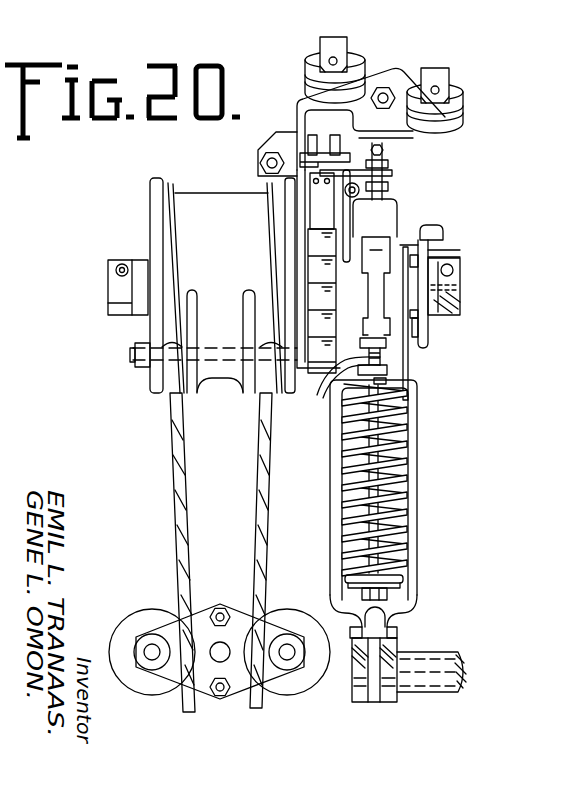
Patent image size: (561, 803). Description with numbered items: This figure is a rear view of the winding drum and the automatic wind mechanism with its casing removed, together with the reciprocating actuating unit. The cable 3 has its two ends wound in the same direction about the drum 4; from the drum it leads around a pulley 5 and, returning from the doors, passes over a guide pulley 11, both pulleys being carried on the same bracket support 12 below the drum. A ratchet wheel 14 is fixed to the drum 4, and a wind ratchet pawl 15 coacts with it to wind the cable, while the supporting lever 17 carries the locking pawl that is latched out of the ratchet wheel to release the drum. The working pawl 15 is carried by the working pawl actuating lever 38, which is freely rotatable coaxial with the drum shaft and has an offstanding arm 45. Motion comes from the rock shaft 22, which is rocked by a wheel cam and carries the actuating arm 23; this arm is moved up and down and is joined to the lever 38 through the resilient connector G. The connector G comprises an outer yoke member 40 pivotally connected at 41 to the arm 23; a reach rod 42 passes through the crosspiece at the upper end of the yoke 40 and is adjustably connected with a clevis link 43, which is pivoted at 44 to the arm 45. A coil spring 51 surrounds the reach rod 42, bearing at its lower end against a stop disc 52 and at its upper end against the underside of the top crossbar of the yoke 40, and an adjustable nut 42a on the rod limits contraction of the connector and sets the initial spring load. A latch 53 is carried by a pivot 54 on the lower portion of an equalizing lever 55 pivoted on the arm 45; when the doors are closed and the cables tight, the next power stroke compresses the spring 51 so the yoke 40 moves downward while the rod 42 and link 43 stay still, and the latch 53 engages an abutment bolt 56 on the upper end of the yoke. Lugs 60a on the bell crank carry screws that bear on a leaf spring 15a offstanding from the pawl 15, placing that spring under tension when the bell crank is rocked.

The cable 3 is at (178, 522).
The drum 4 is at (202, 206).
The pulley 5 is at (136, 623).
The guide pulley 11 is at (303, 681).
The bracket support 12 is at (190, 678).
The ratchet wheel 14 is at (320, 266).
The wind ratchet pawl 15 is at (330, 208).
The leaf spring 15a is at (395, 172).
The supporting lever 17 is at (266, 150).
The rock shaft 22 is at (463, 666).
The actuating arm 23 is at (385, 680).
The working pawl actuating lever 38 is at (378, 246).
The outer yoke member 40 is at (415, 452).
The pivotal connection 41 is at (397, 632).
The reach rod 42 is at (360, 370).
The adjustable nut 42a is at (380, 388).
The clevis link 43 is at (386, 293).
The pivot 44 is at (432, 243).
The offstanding arm 45 is at (465, 276).
The coil spring 51 is at (398, 479).
The stop disc 52 is at (403, 582).
The latch 53 is at (412, 357).
The pivot 54 is at (440, 255).
The equalizing lever 55 is at (388, 222).
The abutment bolt 56 is at (410, 348).
The lugs 60a is at (380, 162).
The resilient connector G is at (413, 560).